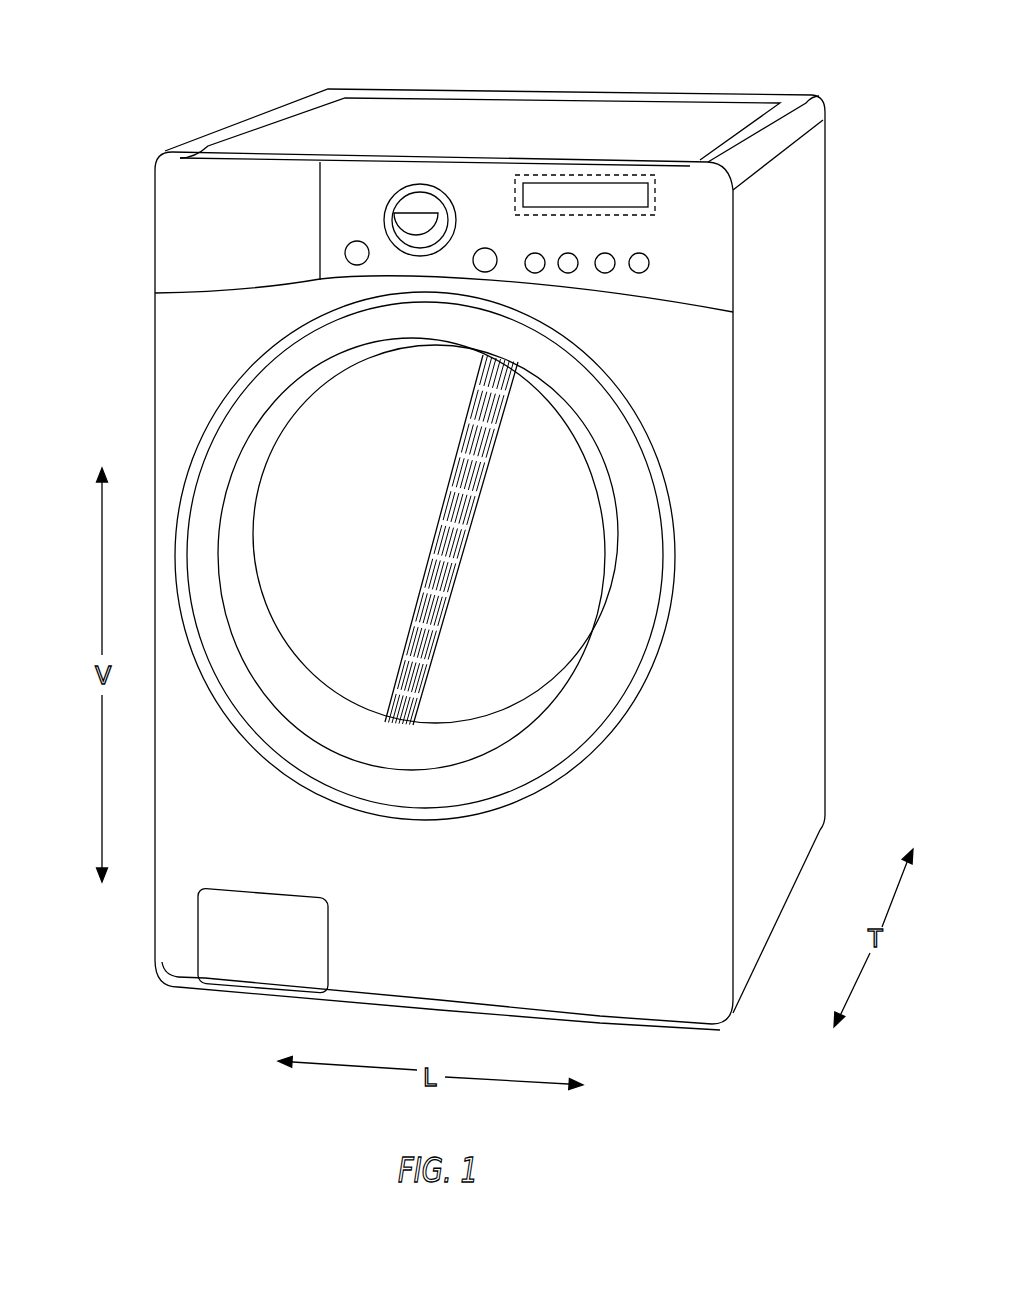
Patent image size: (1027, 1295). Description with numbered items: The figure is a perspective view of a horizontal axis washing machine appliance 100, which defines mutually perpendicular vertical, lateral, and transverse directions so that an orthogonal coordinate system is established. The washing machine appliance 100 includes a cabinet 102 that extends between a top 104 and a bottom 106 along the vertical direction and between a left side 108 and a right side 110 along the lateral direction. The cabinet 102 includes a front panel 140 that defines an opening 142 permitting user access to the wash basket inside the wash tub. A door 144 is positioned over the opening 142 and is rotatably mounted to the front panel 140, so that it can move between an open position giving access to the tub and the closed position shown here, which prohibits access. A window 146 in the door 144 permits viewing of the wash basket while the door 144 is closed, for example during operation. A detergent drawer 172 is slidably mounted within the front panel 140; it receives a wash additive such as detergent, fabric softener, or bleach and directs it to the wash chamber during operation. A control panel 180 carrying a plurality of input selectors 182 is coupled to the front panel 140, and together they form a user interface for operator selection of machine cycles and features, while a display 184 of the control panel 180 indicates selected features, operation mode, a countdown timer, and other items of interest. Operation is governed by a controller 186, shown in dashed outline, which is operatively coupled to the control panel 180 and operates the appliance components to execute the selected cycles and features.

The washing machine appliance 100 is at (484, 550).
The cabinet 102 is at (120, 58).
The top 104 is at (850, 102).
The bottom 106 is at (830, 864).
The left side 108 is at (158, 998).
The right side 110 is at (731, 1040).
The front panel 140 is at (175, 355).
The opening 142 is at (645, 398).
The door 144 is at (651, 512).
The window 146 is at (523, 665).
The detergent drawer 172 is at (175, 192).
The control panel 180 is at (489, 185).
The input selectors 182 is at (413, 208).
The display 184 is at (598, 195).
The controller 186 is at (577, 173).